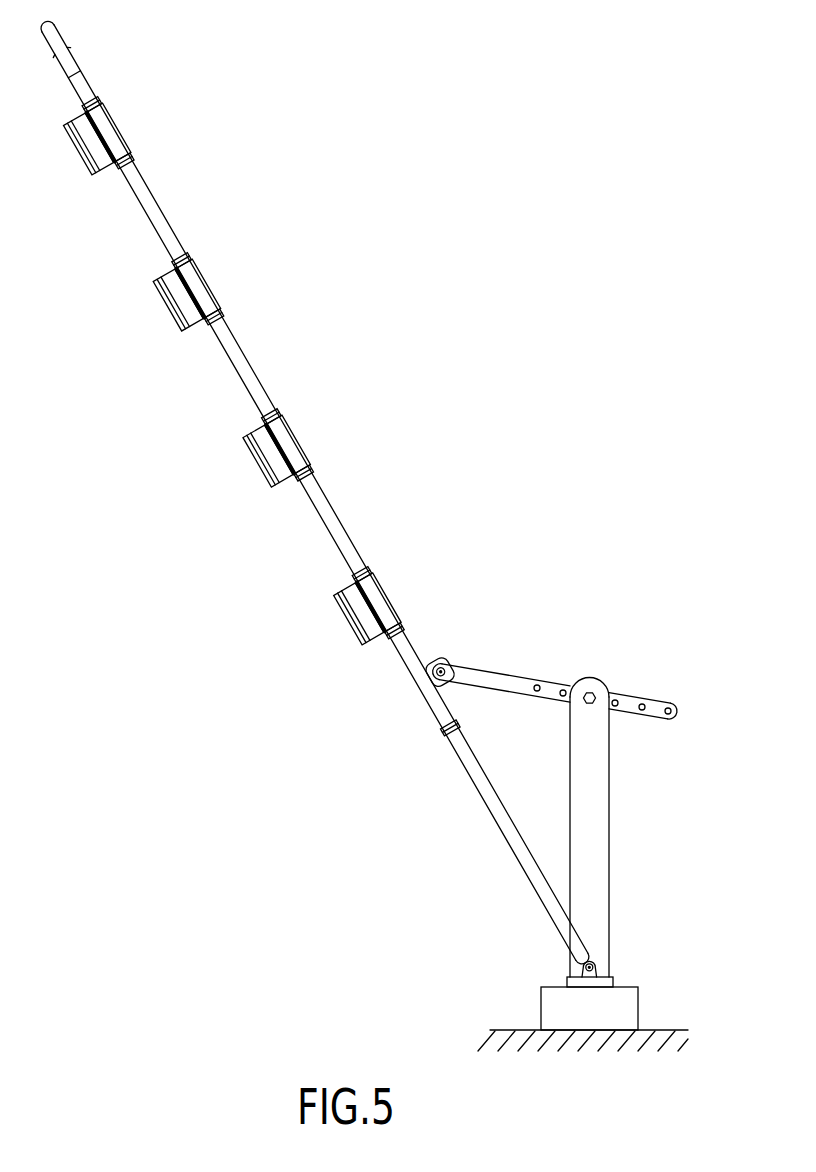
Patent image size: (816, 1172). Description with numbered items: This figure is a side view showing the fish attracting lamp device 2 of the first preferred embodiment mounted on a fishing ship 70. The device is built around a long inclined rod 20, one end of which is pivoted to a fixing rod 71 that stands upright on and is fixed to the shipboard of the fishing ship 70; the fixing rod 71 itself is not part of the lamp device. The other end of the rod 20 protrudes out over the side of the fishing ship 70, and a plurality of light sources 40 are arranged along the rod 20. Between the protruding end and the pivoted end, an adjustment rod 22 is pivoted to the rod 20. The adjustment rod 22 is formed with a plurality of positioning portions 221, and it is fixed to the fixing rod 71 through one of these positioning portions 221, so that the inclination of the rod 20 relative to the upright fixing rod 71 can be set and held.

The fish attracting lamp device 2 is at (315, 492).
The rod 20 is at (148, 203).
The light sources 40 is at (92, 157).
The adjustment rod 22 is at (550, 658).
The positioning portions 221 is at (537, 685).
The fixing rod 71 is at (598, 843).
The fishing ship 70 is at (663, 1038).